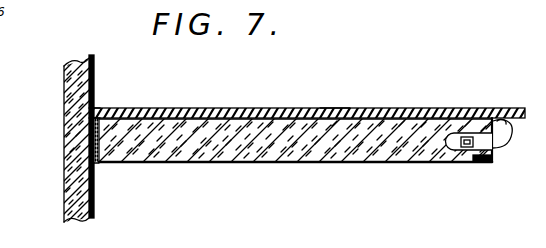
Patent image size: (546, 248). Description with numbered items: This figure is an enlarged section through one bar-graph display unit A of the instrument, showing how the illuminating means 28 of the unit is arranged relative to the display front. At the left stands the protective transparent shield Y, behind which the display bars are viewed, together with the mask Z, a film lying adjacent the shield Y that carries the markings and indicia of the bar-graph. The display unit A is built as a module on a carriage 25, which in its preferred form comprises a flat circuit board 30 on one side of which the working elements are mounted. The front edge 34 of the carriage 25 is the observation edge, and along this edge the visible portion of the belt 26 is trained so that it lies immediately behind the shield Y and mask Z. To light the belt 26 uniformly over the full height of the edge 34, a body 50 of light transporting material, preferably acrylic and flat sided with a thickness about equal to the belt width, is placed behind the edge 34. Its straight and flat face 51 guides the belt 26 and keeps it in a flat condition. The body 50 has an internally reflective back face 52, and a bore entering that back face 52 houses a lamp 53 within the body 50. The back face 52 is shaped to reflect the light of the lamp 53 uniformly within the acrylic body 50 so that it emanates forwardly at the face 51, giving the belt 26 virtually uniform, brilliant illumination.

The protective transparent shield Y is at (70, 90).
The mask Z is at (92, 70).
The front edge 34 is at (89, 115).
The straight and flat face 51 is at (88, 143).
The belt 26 is at (97, 170).
The body of light transporting material 50 is at (248, 150).
The illuminating means 28 is at (326, 168).
The circuit board 30 is at (416, 107).
The bar-graph display unit A is at (335, 104).
The carriage 25 is at (513, 65).
The lamp 53 is at (454, 151).
The internally reflective back face 52 is at (476, 153).